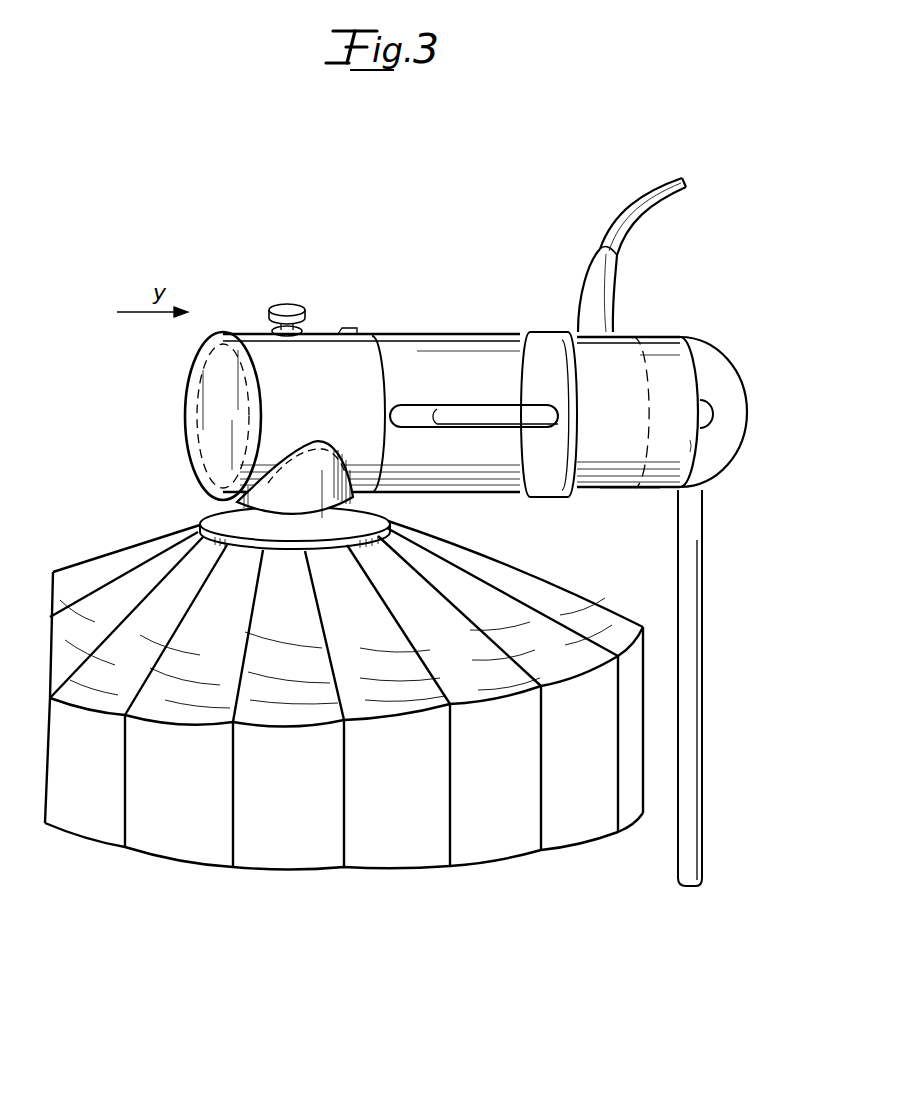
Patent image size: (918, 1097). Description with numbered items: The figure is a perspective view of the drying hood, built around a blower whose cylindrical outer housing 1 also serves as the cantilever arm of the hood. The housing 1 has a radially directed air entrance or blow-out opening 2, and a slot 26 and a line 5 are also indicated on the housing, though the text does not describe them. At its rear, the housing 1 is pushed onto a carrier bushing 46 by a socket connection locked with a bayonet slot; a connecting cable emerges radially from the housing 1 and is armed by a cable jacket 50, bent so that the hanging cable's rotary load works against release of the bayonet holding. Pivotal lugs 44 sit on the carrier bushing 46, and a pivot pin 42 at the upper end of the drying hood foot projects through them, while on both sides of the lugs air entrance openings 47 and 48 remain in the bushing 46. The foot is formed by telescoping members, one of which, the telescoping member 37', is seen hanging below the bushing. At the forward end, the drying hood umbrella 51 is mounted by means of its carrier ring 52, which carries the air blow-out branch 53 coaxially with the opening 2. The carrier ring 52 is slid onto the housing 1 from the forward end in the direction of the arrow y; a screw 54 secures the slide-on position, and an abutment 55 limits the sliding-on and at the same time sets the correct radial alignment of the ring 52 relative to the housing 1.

The cylindrical outer housing 1 is at (455, 343).
The radially directed air entrance opening 2 is at (280, 463).
The section line 5 is at (622, 455).
The slot 26 is at (505, 415).
The telescoping member 37' is at (742, 688).
The pivot pin 42 is at (710, 412).
The pivotal lug 44 is at (727, 380).
The carrier bushing 46 is at (660, 370).
The air entrance opening 47 is at (667, 378).
The air entrance opening 48 is at (678, 443).
The cable jacket 50 is at (600, 285).
The drying hood umbrella 51 is at (412, 843).
The carrier ring 52 is at (283, 405).
The air blow-out branch 53 is at (260, 507).
The screw 54 is at (287, 308).
The abutment 55 is at (350, 328).